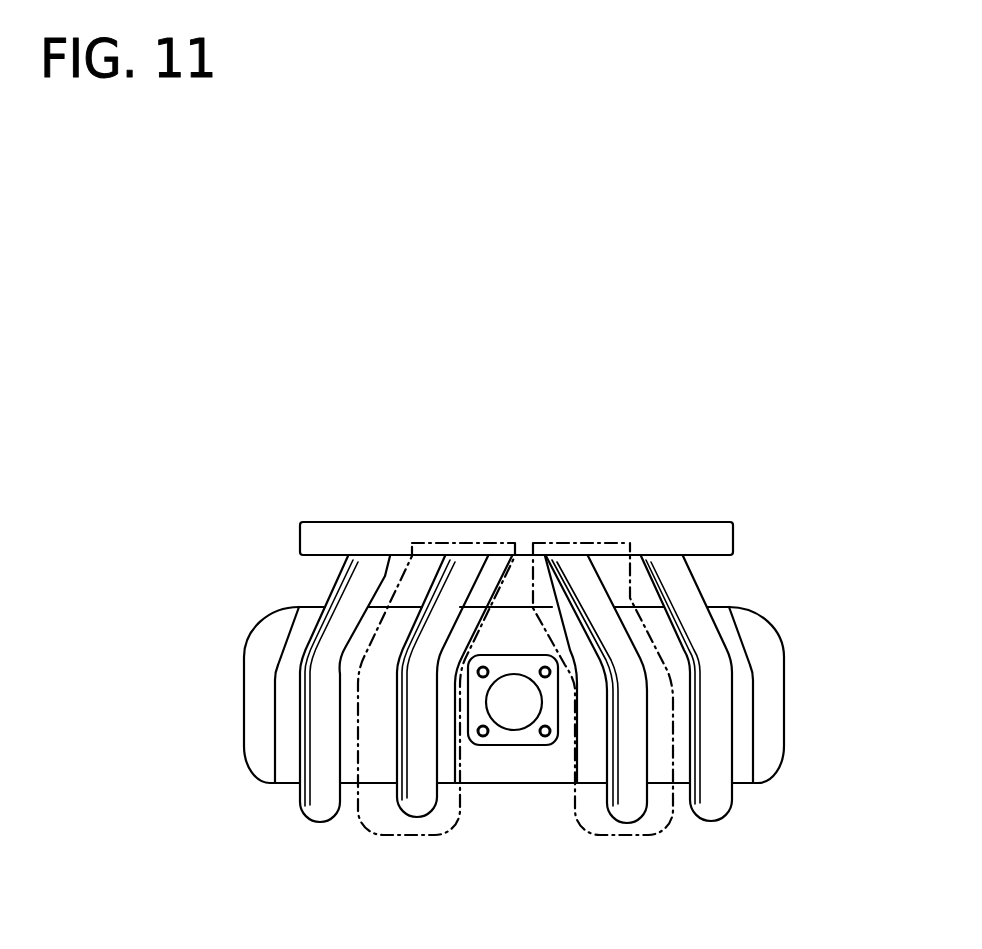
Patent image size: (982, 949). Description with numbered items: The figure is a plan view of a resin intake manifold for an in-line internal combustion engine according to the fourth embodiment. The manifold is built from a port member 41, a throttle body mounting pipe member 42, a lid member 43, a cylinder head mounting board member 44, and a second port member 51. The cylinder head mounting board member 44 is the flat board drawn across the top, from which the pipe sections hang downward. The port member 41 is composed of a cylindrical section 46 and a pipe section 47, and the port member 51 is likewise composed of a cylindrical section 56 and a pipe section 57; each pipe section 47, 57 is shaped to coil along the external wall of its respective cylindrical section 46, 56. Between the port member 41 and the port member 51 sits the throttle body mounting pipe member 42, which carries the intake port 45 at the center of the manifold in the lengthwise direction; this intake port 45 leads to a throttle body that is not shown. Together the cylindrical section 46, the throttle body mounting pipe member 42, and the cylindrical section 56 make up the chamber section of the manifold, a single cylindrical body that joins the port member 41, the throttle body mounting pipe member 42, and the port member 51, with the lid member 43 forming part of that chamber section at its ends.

The port member 41 is at (410, 836).
The throttle body mounting pipe member 42 is at (553, 767).
The lid member 43 is at (257, 658).
The cylinder head mounting board member 44 is at (658, 522).
The intake port 45 is at (505, 713).
The cylindrical section 46 is at (291, 775).
The pipe section 47 is at (323, 808).
The port member 51 is at (619, 836).
The cylindrical section 56 is at (748, 787).
The pipe section 57 is at (712, 810).